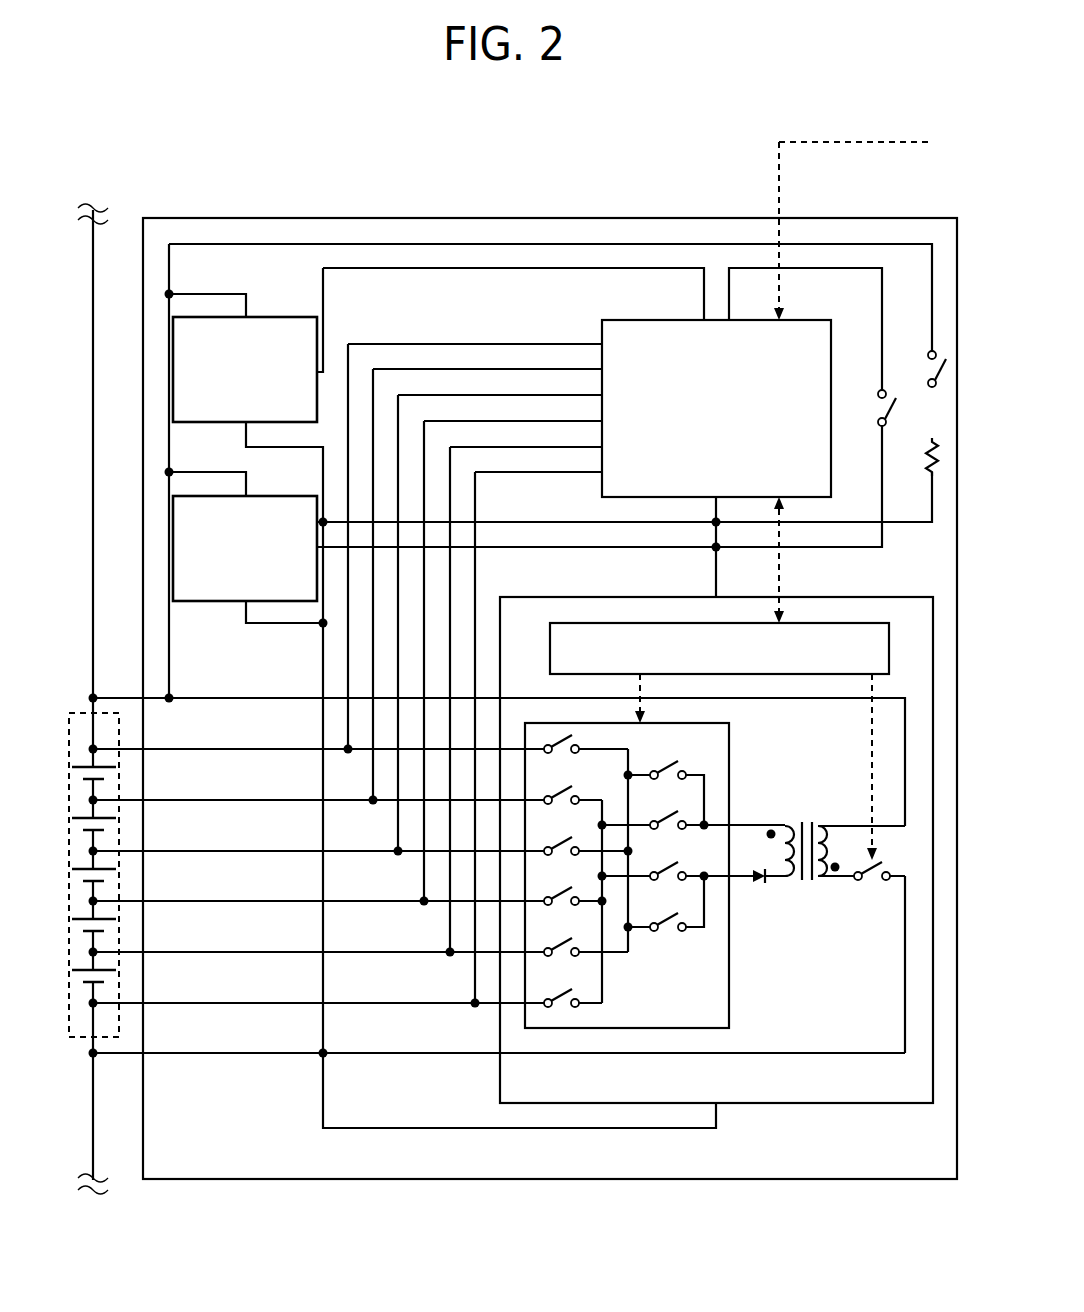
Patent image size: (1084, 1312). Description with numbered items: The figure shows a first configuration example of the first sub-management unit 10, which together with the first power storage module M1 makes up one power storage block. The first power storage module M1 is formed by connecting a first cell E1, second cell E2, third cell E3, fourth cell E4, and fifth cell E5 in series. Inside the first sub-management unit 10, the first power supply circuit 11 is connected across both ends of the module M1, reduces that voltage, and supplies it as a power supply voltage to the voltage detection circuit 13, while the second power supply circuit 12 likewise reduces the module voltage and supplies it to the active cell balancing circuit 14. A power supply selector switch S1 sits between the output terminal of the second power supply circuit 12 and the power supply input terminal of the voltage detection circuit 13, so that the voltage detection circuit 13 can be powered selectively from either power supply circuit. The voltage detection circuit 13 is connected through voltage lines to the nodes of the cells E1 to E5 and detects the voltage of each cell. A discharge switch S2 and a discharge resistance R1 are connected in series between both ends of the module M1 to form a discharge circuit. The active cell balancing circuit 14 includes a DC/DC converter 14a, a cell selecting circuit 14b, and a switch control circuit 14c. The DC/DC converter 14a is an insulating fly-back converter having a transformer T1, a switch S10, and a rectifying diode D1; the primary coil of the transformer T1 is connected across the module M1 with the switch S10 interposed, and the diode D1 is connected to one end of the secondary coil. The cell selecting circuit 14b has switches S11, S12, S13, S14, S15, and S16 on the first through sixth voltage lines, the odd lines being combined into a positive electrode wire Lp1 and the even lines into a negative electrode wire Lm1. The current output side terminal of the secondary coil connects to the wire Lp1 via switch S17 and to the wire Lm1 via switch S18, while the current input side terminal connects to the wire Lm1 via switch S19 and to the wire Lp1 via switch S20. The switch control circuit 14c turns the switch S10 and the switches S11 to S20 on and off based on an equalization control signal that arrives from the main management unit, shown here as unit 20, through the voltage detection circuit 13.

The first sub-management unit 10 is at (928, 217).
The first power supply circuit 11 is at (267, 316).
The second power supply circuit 12 is at (269, 496).
The voltage detection circuit 13 is at (802, 316).
The active cell balancing circuit 14 is at (901, 597).
The DC/DC converter 14a is at (836, 828).
The cell selecting circuit 14b is at (729, 767).
The switch control circuit 14c is at (889, 640).
The second sub-management unit 20 is at (868, 226).
The first power storage module M1 is at (78, 713).
The first cell E1 is at (79, 775).
The second cell E2 is at (79, 826).
The third cell E3 is at (79, 877).
The fourth cell E4 is at (79, 927).
The fifth cell E5 is at (79, 978).
The power supply selector switch S1 is at (872, 408).
The discharge switch S2 is at (923, 369).
The discharge resistance R1 is at (920, 457).
The switch S10 is at (879, 883).
The switch S11 is at (561, 755).
The switch S12 is at (561, 806).
The switch S13 is at (561, 857).
The switch S14 is at (561, 907).
The switch S15 is at (561, 958).
The switch S16 is at (561, 1009).
The switch S17 is at (668, 781).
The switch S18 is at (668, 831).
The switch S19 is at (668, 882).
The switch S20 is at (668, 933).
The positive electrode wire Lp1 is at (629, 761).
The negative electrode wire Lm1 is at (602, 989).
The rectifying diode D1 is at (765, 886).
The transformer T1 is at (805, 861).